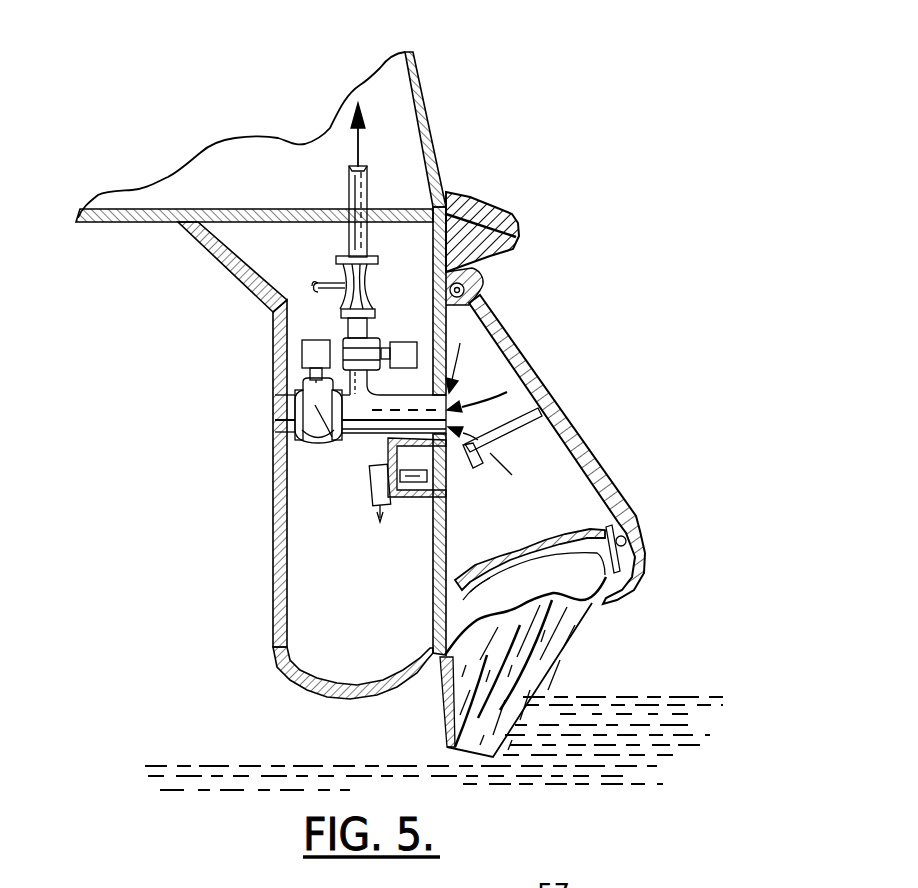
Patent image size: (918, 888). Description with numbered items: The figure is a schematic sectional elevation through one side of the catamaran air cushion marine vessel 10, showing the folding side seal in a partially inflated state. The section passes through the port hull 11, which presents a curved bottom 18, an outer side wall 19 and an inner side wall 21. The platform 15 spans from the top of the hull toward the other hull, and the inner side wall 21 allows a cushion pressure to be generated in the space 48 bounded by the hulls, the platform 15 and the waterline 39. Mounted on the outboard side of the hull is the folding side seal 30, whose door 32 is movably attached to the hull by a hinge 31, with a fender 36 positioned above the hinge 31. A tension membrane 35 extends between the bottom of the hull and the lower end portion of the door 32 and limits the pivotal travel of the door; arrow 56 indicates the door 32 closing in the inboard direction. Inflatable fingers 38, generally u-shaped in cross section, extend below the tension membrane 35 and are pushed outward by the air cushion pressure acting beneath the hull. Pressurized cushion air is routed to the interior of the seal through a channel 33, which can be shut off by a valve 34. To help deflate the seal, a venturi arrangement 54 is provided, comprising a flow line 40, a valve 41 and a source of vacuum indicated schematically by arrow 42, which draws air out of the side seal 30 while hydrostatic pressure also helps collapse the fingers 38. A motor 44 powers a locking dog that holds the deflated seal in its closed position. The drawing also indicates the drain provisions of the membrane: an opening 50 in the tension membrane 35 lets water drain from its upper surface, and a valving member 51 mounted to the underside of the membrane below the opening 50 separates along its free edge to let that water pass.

The marine vessel 10 is at (531, 78).
The port hull 11 is at (273, 588).
The platform 15 is at (168, 210).
The curved bottom 18 is at (376, 694).
The outer side wall 19 is at (434, 557).
The inner side wall 21 is at (273, 498).
The folding side seal 30 is at (611, 421).
The hinge 31 is at (480, 292).
The door 32 is at (524, 381).
The channel 33 is at (371, 430).
The valve 34 is at (315, 408).
The tension membrane 35 is at (604, 532).
The fender 36 is at (490, 204).
The inflatable fingers 38 is at (555, 662).
The waterline 39 is at (723, 655).
The flow line 40 is at (373, 323).
The valve 41 is at (347, 358).
The source of vacuum 42 is at (357, 147).
The motor 44 is at (377, 494).
The space 48 is at (223, 382).
The opening 50 is at (527, 518).
The valving member 51 is at (530, 558).
The venturi arrangement 54 is at (292, 258).
The arrow 56 is at (461, 518).